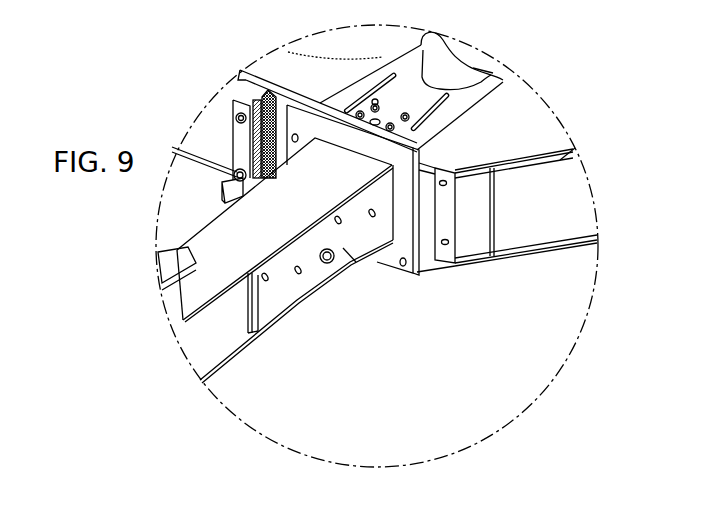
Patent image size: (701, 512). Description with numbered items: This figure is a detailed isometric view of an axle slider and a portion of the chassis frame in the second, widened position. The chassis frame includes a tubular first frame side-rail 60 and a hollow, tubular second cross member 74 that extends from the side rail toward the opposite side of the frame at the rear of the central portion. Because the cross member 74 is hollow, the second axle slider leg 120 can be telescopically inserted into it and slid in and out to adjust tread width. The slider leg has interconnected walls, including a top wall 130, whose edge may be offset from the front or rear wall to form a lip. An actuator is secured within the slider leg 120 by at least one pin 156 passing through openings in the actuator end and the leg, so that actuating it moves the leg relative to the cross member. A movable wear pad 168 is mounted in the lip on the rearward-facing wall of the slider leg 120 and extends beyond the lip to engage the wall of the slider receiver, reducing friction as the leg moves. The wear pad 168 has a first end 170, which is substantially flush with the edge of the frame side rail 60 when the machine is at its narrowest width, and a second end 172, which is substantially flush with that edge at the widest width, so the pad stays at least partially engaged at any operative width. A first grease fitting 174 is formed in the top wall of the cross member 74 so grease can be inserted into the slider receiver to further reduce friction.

The first frame side-rail 60 is at (333, 68).
The second cross member 74 is at (474, 68).
The second axle slider leg 120 is at (237, 257).
The top wall 130 is at (218, 230).
The pin 156 is at (330, 258).
The movable wear pad 168 is at (343, 248).
The first end 170 is at (262, 302).
The second end 172 is at (388, 236).
The first grease fitting 174 is at (403, 98).